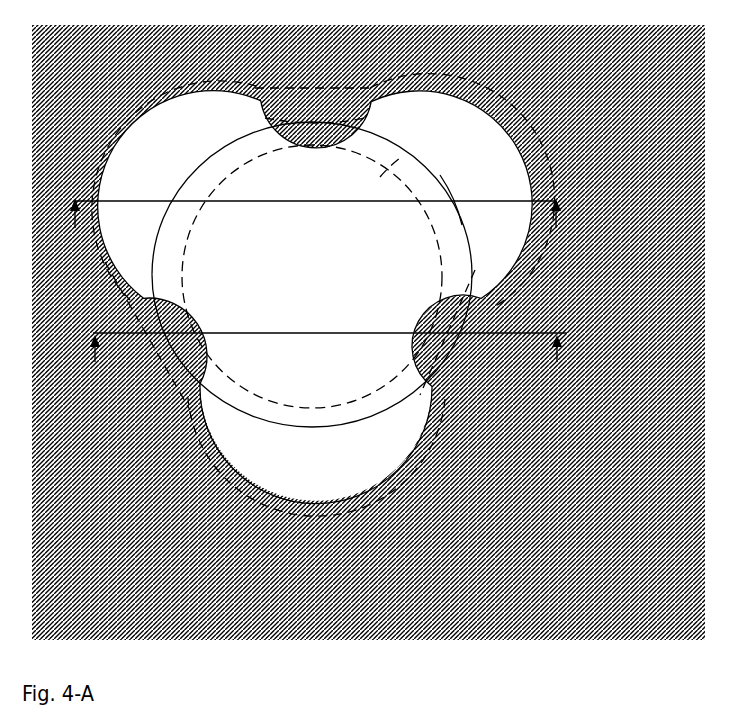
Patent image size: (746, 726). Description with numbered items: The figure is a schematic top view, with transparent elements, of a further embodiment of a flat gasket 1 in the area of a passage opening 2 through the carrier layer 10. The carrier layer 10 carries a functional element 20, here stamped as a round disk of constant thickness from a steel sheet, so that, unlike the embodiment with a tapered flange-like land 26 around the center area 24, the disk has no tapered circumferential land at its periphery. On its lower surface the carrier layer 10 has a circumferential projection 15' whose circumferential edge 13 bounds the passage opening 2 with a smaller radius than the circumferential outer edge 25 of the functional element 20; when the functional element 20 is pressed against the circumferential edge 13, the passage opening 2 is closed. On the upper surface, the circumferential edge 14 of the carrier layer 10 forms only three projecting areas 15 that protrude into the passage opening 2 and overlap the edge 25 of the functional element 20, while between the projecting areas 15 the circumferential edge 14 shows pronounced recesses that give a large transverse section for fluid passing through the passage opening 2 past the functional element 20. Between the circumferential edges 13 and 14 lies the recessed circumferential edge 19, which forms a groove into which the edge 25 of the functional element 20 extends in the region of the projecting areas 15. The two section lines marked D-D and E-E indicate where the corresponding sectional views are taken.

The flat gasket 1 is at (588, 345).
The passage opening 2 is at (248, 251).
The carrier layer 10 is at (597, 181).
The circumferential edge 13 is at (400, 180).
The circumferential edge 14 is at (477, 100).
The projecting areas 15 is at (312, 244).
The circumferential projection 15' is at (474, 200).
The circumferential edge 19 is at (523, 135).
The functional element 20 is at (322, 283).
The center area 24 is at (322, 356).
The circumferential outer edge 25 is at (430, 170).
The flange-like land 26 is at (342, 417).